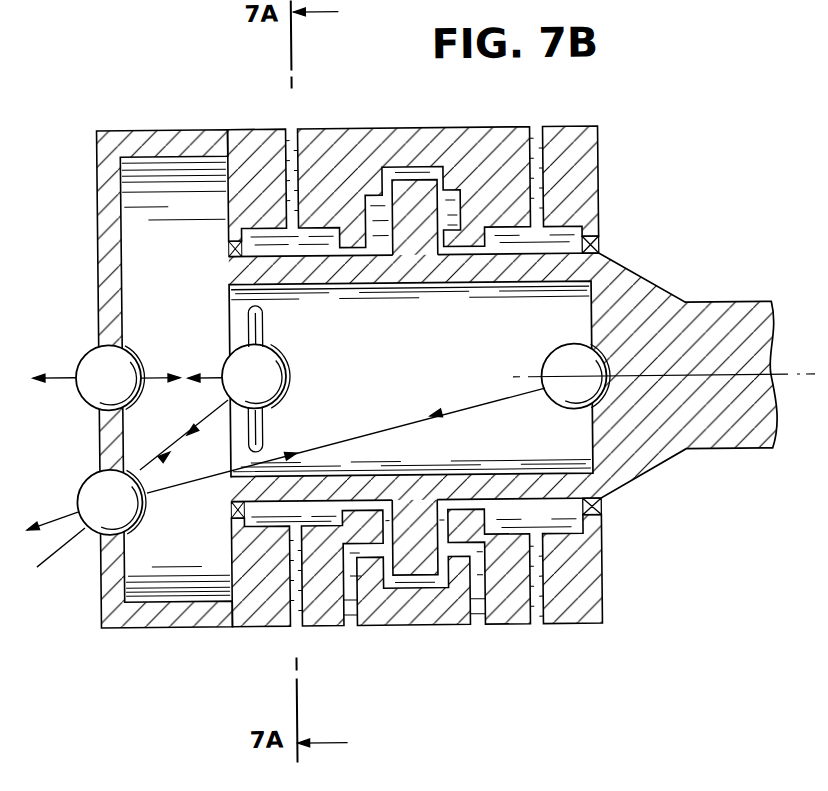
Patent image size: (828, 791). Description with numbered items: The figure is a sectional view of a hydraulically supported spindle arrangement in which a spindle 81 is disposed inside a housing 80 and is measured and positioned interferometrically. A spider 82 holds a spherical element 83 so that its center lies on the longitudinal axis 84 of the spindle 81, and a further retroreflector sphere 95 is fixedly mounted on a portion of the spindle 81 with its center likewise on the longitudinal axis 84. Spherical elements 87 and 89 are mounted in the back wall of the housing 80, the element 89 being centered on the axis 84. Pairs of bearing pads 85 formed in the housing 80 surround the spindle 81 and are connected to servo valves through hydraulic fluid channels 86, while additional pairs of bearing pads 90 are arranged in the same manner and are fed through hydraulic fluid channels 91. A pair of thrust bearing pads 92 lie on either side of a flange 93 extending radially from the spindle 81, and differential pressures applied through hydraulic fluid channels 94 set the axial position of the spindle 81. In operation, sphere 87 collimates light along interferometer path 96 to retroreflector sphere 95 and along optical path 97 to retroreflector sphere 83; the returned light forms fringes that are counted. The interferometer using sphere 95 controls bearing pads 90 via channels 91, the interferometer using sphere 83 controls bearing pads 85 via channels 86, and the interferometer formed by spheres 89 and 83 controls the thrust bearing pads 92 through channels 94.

The housing 80 is at (346, 130).
The spindle 81 is at (653, 285).
The spider 82 is at (254, 316).
The spherical element 83 is at (287, 366).
The longitudinal axis 84 is at (786, 372).
The bearing pads 85 is at (258, 241).
The hydraulic fluid channels 86 is at (292, 129).
The spherical element 87 is at (87, 488).
The spherical element 89 is at (88, 360).
The bearing pads 90 is at (568, 240).
The hydraulic fluid channels 91 is at (540, 132).
The thrust bearing pads 92 is at (452, 198).
The flange 93 is at (426, 538).
The hydraulic fluid channels 94 is at (346, 628).
The retroreflector sphere 95 is at (552, 364).
The interferometer path 96 is at (412, 425).
The optical path 97 is at (210, 420).